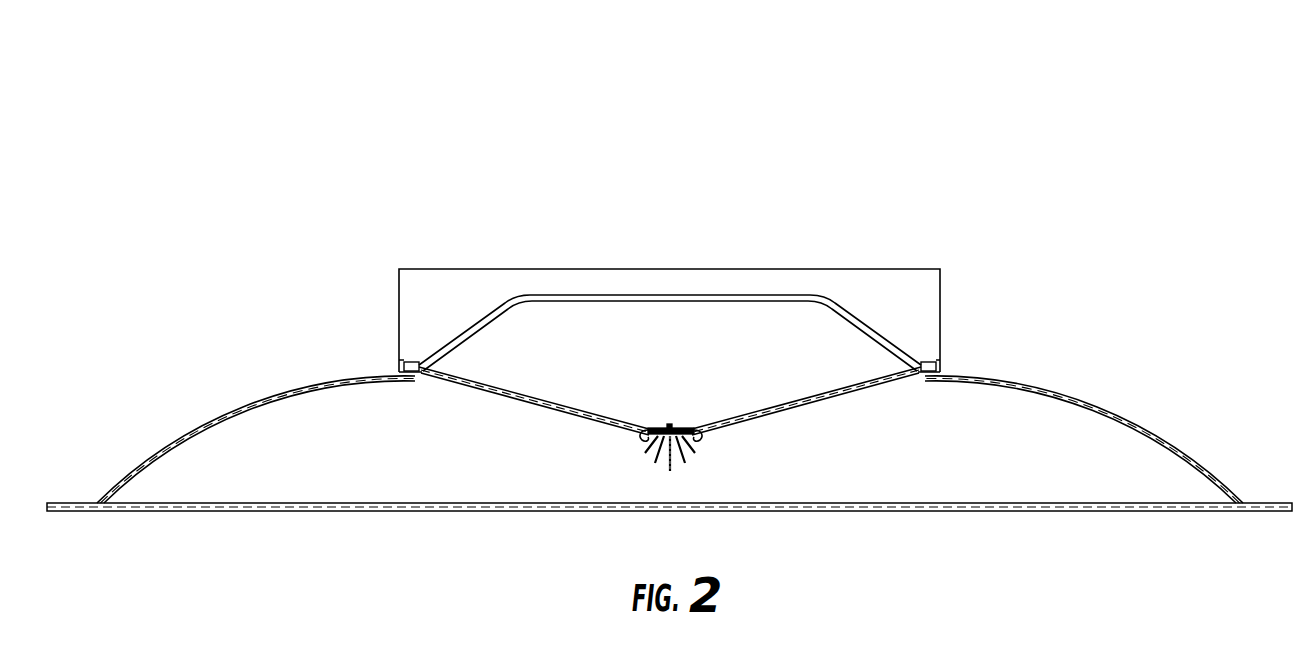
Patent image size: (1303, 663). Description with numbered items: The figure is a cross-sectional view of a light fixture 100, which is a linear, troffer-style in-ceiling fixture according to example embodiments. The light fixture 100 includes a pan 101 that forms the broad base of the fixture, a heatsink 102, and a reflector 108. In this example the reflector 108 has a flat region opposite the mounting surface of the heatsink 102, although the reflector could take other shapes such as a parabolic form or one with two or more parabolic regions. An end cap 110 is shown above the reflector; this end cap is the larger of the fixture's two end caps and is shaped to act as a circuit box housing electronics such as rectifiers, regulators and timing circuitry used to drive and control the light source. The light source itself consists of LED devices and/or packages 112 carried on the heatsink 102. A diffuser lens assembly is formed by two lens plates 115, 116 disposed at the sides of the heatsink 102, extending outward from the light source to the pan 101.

The light fixture 100 is at (1029, 172).
The pan 101 is at (1118, 411).
The heatsink 102 is at (698, 440).
The reflector 108 is at (450, 339).
The end cap 110 is at (636, 269).
The LED devices and/or packages 112 is at (670, 428).
The lens plate 115 is at (532, 407).
The lens plate 116 is at (834, 401).